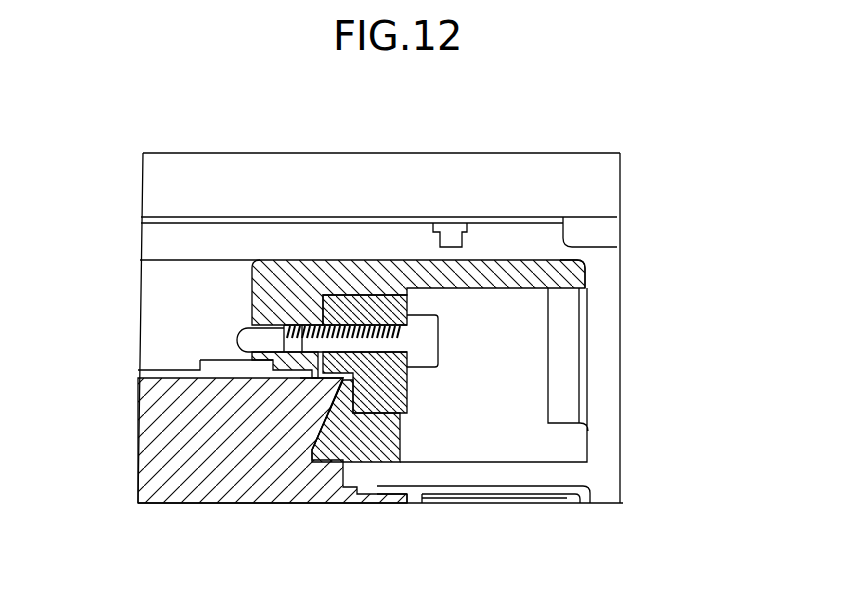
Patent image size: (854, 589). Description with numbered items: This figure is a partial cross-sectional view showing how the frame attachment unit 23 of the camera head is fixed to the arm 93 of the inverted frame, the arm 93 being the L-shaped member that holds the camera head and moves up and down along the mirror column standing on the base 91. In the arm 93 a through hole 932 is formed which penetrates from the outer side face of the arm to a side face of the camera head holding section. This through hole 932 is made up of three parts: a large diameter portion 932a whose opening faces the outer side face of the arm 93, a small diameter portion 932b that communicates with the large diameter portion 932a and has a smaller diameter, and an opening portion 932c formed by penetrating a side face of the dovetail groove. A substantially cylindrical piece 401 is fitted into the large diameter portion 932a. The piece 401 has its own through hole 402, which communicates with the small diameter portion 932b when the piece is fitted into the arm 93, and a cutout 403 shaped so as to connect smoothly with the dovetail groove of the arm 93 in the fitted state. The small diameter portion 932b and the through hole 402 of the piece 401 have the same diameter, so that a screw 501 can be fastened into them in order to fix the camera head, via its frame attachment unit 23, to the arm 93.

The base 91 is at (605, 190).
The arm 93 is at (587, 273).
The large diameter portion 932a is at (408, 303).
The small diameter portion 932b is at (299, 345).
The piece 401 is at (371, 300).
The screw 501 is at (427, 328).
The through hole 402 is at (440, 342).
The through hole 932 is at (407, 393).
The frame attachment unit 23 is at (213, 485).
The cutout 403 is at (340, 400).
The opening portion 932c is at (318, 422).